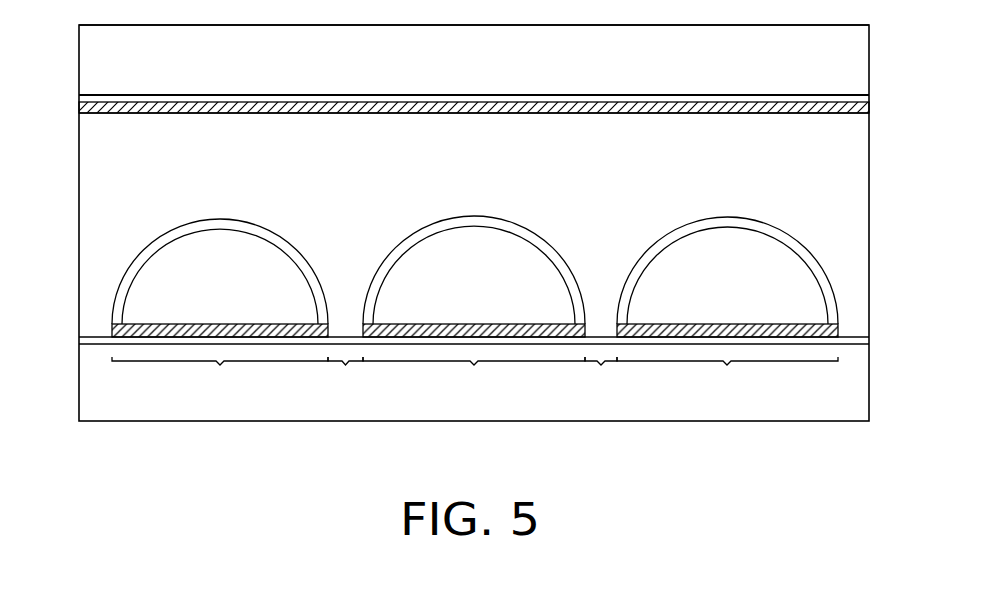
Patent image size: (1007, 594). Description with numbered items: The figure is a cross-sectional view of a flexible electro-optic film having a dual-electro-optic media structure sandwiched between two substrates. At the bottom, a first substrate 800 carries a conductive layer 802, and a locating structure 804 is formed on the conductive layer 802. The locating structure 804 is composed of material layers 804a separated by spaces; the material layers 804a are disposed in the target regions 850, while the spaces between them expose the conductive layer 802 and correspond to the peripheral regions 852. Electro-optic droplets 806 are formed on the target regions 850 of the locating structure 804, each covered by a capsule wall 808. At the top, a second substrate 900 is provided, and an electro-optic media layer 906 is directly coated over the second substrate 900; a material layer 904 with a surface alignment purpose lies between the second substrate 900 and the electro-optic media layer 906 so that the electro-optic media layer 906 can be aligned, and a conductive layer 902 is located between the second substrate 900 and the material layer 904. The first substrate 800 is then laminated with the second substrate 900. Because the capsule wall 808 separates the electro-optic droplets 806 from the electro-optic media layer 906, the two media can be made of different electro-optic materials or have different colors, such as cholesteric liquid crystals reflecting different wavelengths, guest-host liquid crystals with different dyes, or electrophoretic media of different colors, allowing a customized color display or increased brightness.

The first substrate 800 is at (858, 391).
The conductive layer 802 is at (858, 340).
The locating structure 804 is at (827, 327).
The material layer 804a is at (157, 323).
The electro-optic droplet 806 is at (777, 295).
The capsule wall 808 is at (785, 242).
The target region 850 is at (475, 377).
The peripheral region 852 is at (474, 377).
The second substrate 900 is at (857, 48).
The conductive layer 902 is at (858, 99).
The material layer 904 is at (858, 108).
The electro-optic media layer 906 is at (863, 139).